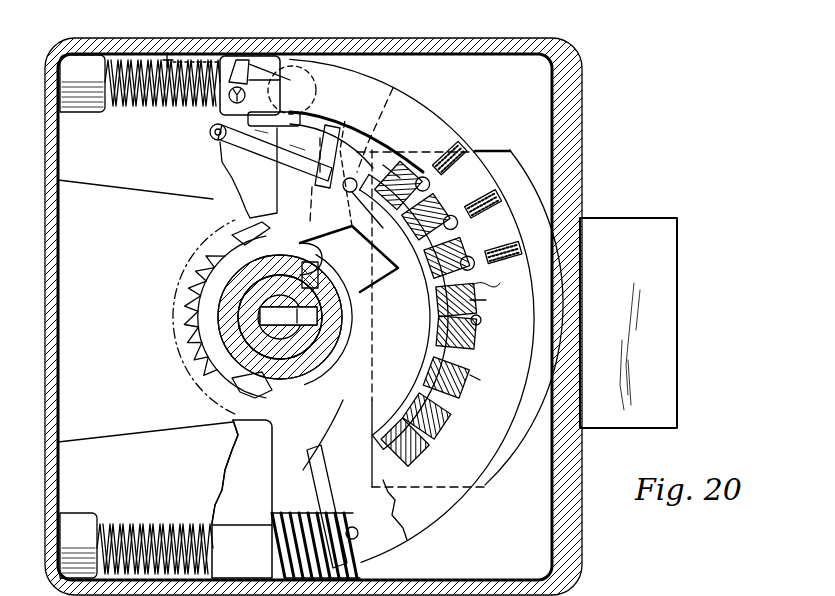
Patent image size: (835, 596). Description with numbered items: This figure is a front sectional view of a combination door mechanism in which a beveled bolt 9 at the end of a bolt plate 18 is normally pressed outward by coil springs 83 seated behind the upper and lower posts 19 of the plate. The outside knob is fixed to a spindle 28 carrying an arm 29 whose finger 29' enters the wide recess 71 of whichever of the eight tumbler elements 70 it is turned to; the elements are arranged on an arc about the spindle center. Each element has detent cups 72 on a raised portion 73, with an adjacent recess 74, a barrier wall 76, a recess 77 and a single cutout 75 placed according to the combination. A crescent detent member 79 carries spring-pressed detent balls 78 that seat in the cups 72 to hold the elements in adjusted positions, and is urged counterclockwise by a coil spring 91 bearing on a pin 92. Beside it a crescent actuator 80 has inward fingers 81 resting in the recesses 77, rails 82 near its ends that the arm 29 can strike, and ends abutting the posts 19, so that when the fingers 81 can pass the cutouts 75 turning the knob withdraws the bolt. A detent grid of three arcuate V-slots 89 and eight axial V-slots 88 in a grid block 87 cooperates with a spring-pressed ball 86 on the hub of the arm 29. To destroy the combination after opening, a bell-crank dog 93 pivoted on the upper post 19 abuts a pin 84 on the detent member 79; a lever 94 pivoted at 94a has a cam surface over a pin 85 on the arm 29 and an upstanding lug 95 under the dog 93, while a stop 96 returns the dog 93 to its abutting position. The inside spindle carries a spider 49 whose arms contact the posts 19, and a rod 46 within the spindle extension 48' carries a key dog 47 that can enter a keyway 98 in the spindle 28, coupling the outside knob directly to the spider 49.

The beveled bolt 9 is at (668, 271).
The bolt plate 18 is at (535, 537).
The post 19 is at (260, 63).
The spindle 28 is at (255, 222).
The arm 29 is at (356, 271).
The finger 29' is at (375, 183).
The rod 46 is at (288, 300).
The key dog 47 is at (285, 368).
The extension 48' is at (357, 320).
The spider 49 is at (340, 390).
The tumbler element 70 is at (400, 262).
The recess 71 is at (440, 310).
The detent cup 72 is at (446, 200).
The raised portion 73 is at (385, 165).
The recess 74 is at (472, 250).
The cutout 75 is at (478, 372).
The barrier wall 76 is at (478, 287).
The recess 77 is at (488, 302).
The detent ball 78 is at (423, 165).
The detent member 79 is at (420, 112).
The actuator 80 is at (532, 330).
The finger 81 is at (481, 320).
The rail 82 is at (345, 135).
The coil spring 83 is at (125, 107).
The pin 84 is at (312, 103).
The pin 85 is at (342, 187).
The spring-pressed ball 86 is at (262, 396).
The grid block 87 is at (108, 425).
The V-slot 88 is at (215, 232).
The V-slot 89 is at (242, 422).
The coil spring 91 is at (310, 510).
The pin 92 is at (353, 500).
The bell-crank dog 93 is at (268, 88).
The lever 94 is at (270, 147).
The pivot 94a is at (216, 140).
The lug 95 is at (282, 128).
The stop 96 is at (203, 48).
The keyway 98 is at (317, 272).